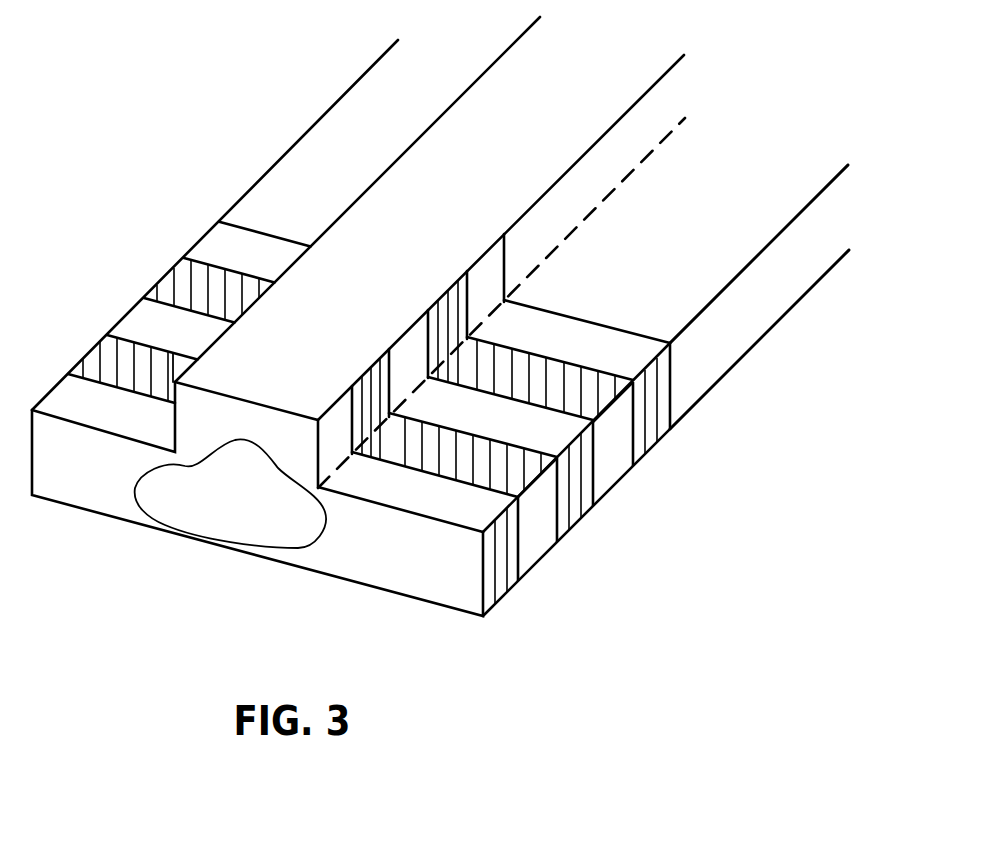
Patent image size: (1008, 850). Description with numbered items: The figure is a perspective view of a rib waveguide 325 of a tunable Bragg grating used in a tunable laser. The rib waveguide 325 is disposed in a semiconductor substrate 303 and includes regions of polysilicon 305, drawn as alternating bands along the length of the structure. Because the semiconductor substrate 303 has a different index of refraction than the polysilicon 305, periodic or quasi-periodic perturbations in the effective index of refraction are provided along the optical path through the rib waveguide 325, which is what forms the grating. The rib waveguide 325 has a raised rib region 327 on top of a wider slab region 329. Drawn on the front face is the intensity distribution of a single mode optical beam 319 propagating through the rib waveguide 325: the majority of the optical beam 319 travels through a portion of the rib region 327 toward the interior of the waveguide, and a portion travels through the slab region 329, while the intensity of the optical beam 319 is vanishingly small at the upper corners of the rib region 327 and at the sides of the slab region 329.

The semiconductor substrate 303 is at (507, 595).
The polysilicon 305 is at (549, 556).
The optical beam 319 is at (258, 540).
The rib waveguide 325 is at (837, 119).
The rib region 327 is at (304, 448).
The slab region 329 is at (434, 583).